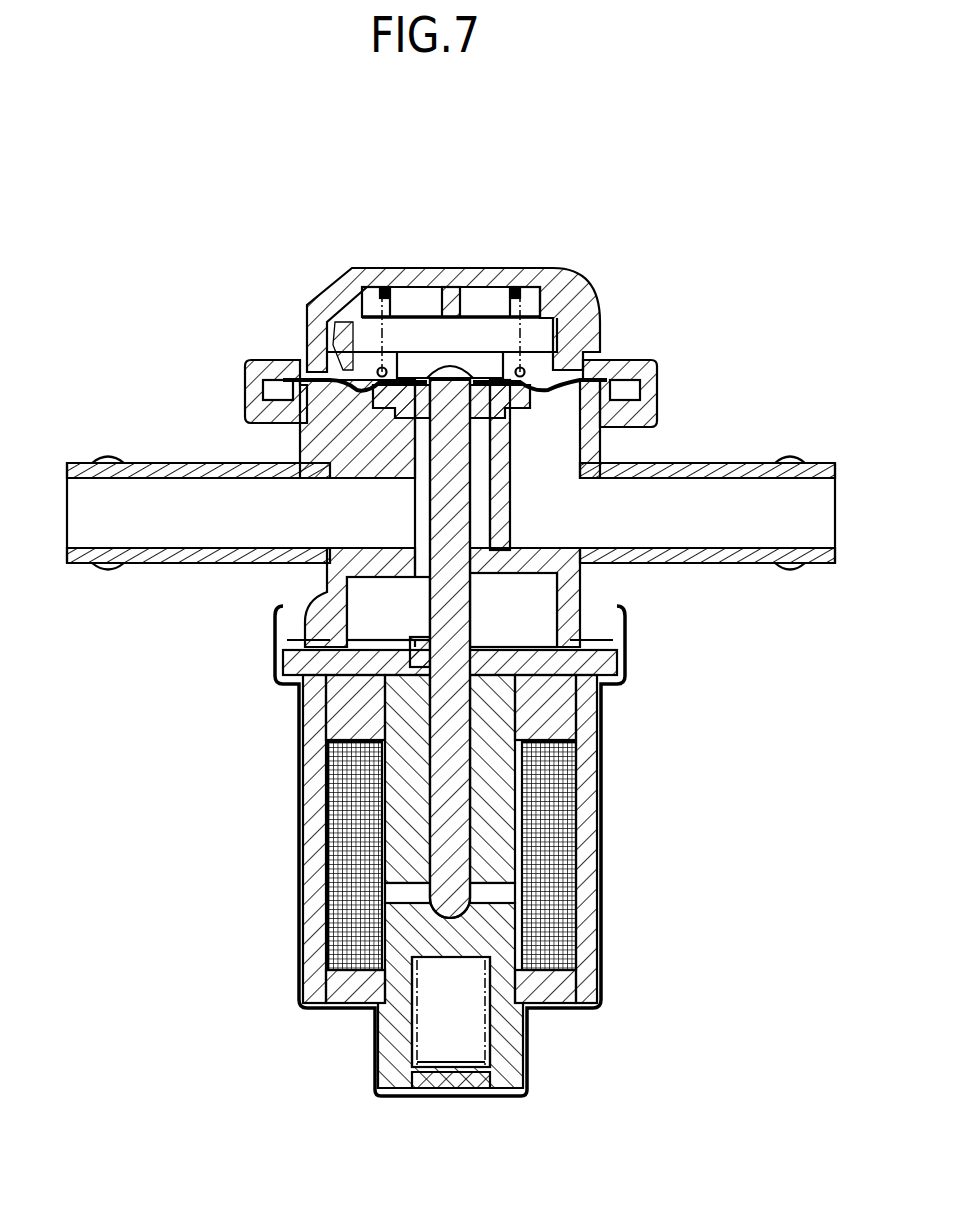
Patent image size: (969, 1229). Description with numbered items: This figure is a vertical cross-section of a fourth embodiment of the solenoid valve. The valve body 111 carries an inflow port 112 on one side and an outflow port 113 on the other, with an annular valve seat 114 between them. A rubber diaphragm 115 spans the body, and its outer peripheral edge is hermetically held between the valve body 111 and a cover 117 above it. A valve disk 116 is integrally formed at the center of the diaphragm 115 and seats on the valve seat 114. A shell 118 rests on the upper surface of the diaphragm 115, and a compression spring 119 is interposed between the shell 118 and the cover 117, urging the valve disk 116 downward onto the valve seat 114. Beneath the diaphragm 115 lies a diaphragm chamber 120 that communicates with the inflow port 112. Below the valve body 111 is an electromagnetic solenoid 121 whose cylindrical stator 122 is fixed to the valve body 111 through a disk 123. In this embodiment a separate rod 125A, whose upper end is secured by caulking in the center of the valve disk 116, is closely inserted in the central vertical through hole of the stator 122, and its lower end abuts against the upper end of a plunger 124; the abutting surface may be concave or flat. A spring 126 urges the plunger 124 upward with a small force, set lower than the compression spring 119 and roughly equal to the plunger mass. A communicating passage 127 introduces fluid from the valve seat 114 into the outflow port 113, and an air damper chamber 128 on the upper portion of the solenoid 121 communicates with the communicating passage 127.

The valve body 111 is at (300, 442).
The inflow port 112 is at (800, 462).
The outflow port 113 is at (105, 462).
The annular valve seat 114 is at (513, 418).
The diaphragm 115 is at (600, 357).
The valve disk 116 is at (548, 378).
The cover 117 is at (330, 268).
The shell 118 is at (336, 330).
The compression spring 119 is at (392, 295).
The diaphragm chamber 120 is at (307, 347).
The electromagnetic solenoid 121 is at (595, 925).
The stator 122 is at (497, 797).
The disk 123 is at (605, 666).
The plunger 124 is at (493, 925).
The rod 125A is at (457, 606).
The spring 126 is at (412, 1035).
The communicating passage 127 is at (418, 503).
The air damper chamber 128 is at (410, 620).